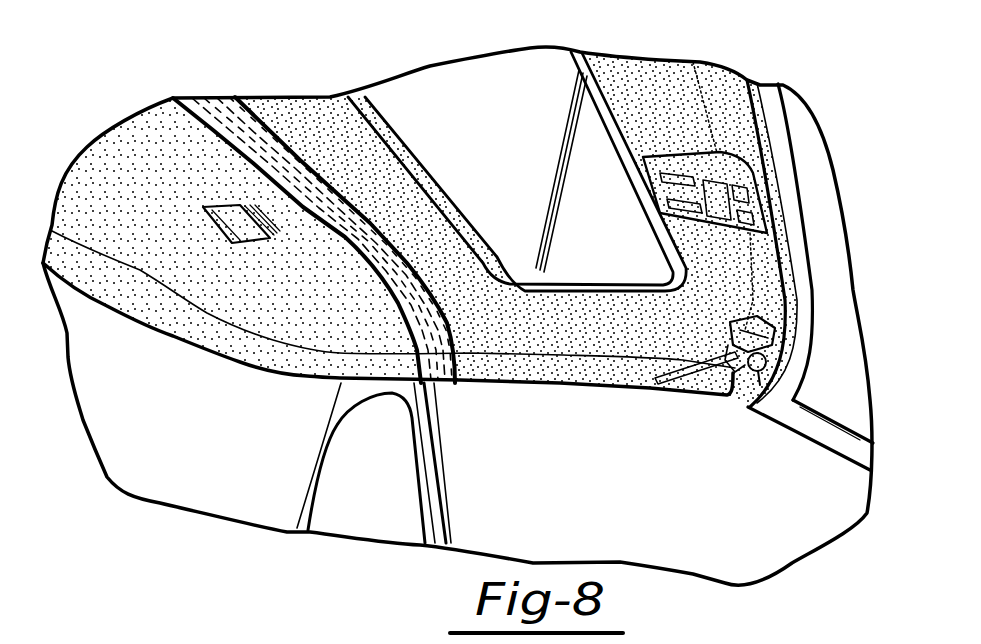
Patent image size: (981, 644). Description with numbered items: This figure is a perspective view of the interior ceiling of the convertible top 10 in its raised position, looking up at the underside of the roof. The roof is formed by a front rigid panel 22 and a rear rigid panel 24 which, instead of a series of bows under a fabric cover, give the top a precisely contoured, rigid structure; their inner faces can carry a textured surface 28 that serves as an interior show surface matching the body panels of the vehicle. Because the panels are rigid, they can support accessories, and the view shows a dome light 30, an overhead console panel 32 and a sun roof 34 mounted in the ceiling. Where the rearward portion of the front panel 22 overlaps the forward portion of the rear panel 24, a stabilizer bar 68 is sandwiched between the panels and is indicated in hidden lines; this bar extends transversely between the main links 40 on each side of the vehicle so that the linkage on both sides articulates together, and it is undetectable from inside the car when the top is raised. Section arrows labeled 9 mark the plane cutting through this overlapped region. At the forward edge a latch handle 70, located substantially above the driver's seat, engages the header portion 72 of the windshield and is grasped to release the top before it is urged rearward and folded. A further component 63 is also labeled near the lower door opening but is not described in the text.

The convertible top 10 is at (140, 97).
The front rigid panel 22 is at (313, 137).
The rear rigid panel 24 is at (110, 200).
The textured surface 28 is at (593, 327).
The dome light 30 is at (230, 242).
The overhead console panel 32 is at (693, 160).
The sun roof 34 is at (502, 110).
The main link 40 is at (423, 480).
The door opening frame 63 is at (370, 480).
The stabilizer bar 68 is at (226, 120).
The latch handle 70 is at (675, 397).
The header portion 72 is at (803, 273).
The section line 9 is at (273, 262).